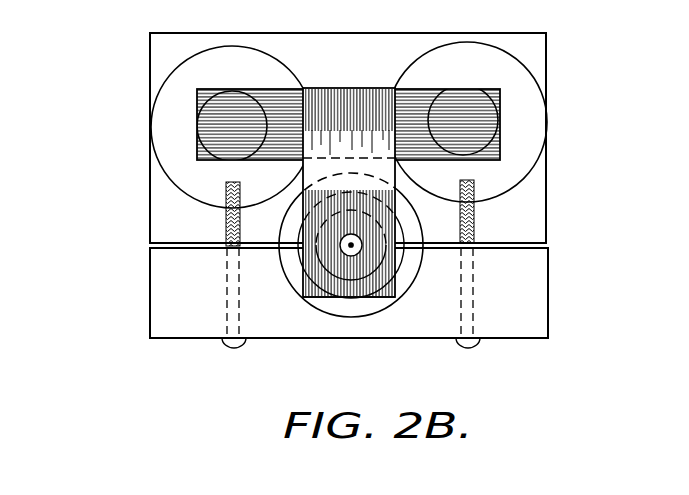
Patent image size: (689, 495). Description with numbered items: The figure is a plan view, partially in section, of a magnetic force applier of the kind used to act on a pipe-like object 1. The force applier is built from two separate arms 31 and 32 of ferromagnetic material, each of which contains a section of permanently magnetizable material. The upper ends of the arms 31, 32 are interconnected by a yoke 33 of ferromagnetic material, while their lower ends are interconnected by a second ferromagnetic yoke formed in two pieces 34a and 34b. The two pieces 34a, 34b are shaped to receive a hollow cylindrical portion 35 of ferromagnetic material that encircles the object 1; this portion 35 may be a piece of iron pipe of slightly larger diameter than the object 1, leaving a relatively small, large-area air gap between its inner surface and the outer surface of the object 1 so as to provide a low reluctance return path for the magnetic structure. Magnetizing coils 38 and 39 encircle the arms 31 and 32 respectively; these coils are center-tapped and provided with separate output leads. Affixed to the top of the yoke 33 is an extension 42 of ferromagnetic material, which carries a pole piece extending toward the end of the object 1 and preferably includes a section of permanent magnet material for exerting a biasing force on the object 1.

The object 1 is at (393, 300).
The arm 31 is at (463, 100).
The arm 32 is at (232, 108).
The yoke 33 is at (280, 100).
The yoke piece 34a is at (527, 207).
The yoke piece 34b is at (527, 283).
The hollow cylindrical portion 35 is at (333, 312).
The magnetizing coil 38 is at (528, 111).
The magnetizing coil 39 is at (165, 109).
The extension 42 is at (350, 100).